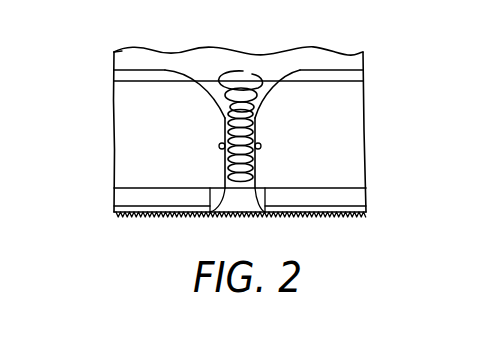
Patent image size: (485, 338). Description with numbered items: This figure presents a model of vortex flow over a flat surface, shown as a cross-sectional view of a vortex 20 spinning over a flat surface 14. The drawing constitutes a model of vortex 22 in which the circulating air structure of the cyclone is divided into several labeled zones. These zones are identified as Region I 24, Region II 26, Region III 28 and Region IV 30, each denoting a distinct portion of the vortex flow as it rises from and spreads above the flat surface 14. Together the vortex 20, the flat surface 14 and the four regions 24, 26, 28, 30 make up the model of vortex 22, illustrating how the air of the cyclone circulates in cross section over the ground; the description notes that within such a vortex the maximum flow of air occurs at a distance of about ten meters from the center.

The flat surface 14 is at (133, 215).
The vortex 20 is at (327, 52).
The model of vortex 22 is at (408, 130).
The Region I 24 is at (219, 146).
The Region II 26 is at (168, 198).
The Region III 28 is at (257, 185).
The Region IV 30 is at (113, 60).